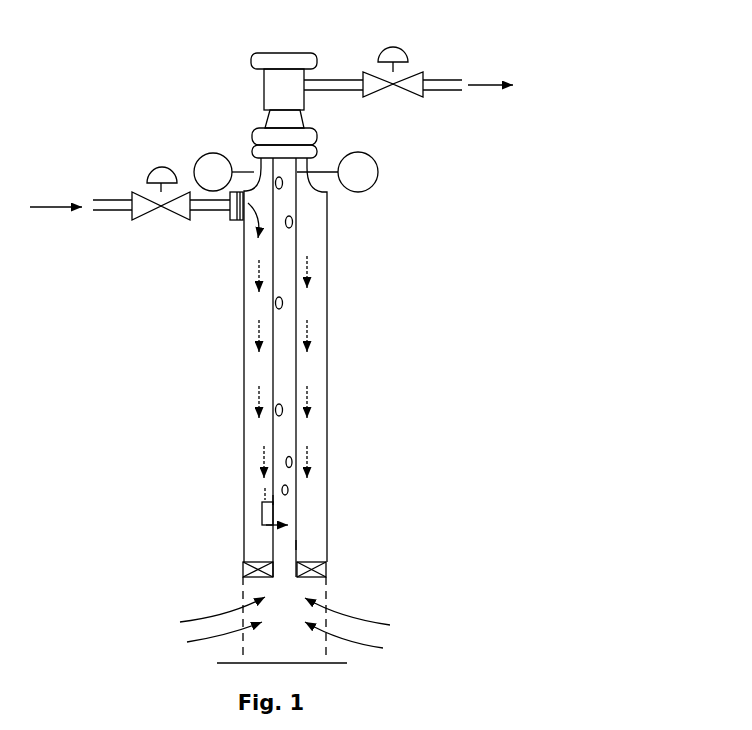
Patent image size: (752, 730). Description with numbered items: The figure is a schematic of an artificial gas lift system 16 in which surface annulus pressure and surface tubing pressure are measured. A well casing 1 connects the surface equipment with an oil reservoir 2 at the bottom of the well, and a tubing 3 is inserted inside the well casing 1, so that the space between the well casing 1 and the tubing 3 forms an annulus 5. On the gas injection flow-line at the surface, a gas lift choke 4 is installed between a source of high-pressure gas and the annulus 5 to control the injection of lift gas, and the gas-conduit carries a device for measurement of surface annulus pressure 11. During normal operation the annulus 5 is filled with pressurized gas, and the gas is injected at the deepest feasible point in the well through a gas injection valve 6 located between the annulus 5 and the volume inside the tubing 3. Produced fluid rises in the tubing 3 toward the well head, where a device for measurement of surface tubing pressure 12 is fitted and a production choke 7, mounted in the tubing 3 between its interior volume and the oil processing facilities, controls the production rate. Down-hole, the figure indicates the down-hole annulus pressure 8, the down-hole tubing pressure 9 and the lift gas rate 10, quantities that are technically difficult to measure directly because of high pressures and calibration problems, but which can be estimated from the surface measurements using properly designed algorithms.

The artificial gas lift system 16 is at (69, 91).
The well casing 1 is at (327, 247).
The oil reservoir 2 is at (327, 593).
The tubing 3 is at (285, 383).
The gas lift choke 4 is at (161, 167).
The annulus 5 is at (310, 310).
The gas injection valve 6 is at (262, 527).
The production choke 7 is at (393, 48).
The down-hole annulus pressure 8 is at (268, 543).
The down-hole tubing pressure 9 is at (285, 545).
The lift gas rate 10 is at (270, 500).
The device for measurement of surface annulus pressure 11 is at (216, 153).
The device for measurement of surface tubing pressure 12 is at (358, 152).